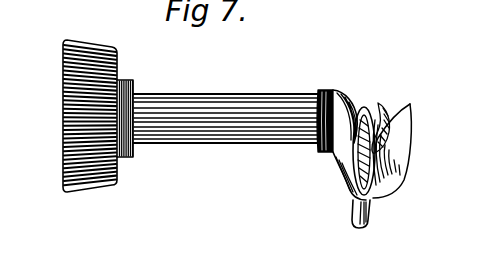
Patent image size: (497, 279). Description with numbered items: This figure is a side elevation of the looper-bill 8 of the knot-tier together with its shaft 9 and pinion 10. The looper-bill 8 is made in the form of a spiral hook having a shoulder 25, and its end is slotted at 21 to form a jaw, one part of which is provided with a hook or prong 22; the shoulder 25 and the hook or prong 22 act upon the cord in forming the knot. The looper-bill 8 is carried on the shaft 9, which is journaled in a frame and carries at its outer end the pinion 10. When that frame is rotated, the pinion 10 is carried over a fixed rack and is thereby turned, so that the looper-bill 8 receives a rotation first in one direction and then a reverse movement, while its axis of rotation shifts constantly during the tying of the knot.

The looper-bill 8 is at (365, 145).
The shaft 9 is at (217, 116).
The pinion 10 is at (77, 116).
The slot 21 is at (360, 181).
The hook or prong 22 is at (378, 122).
The shoulder 25 is at (359, 228).